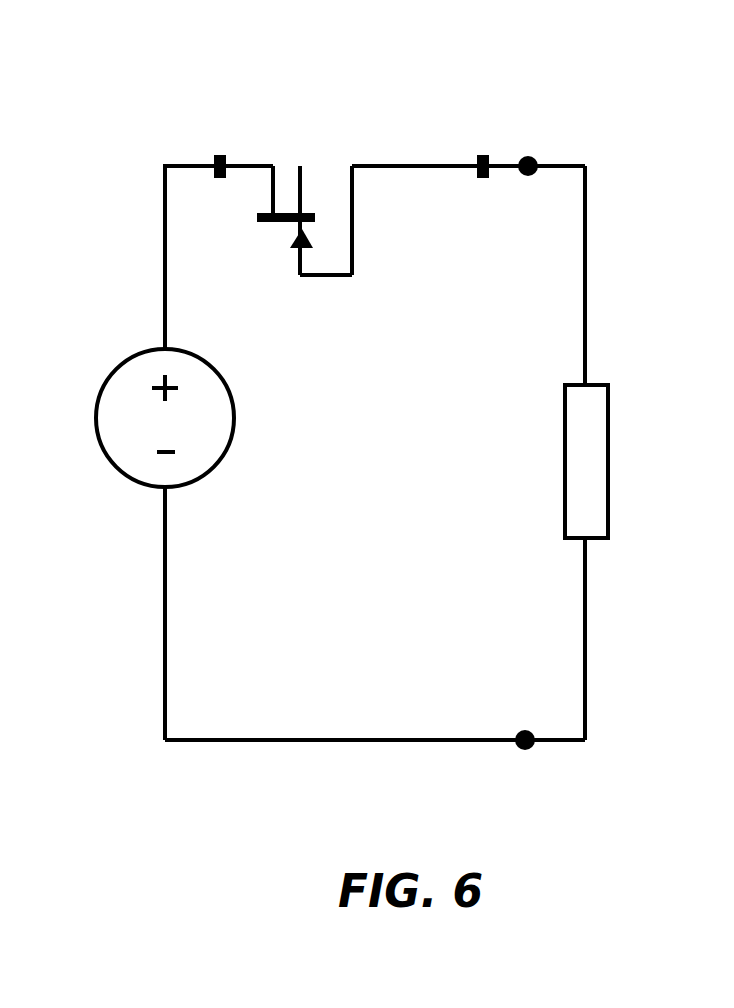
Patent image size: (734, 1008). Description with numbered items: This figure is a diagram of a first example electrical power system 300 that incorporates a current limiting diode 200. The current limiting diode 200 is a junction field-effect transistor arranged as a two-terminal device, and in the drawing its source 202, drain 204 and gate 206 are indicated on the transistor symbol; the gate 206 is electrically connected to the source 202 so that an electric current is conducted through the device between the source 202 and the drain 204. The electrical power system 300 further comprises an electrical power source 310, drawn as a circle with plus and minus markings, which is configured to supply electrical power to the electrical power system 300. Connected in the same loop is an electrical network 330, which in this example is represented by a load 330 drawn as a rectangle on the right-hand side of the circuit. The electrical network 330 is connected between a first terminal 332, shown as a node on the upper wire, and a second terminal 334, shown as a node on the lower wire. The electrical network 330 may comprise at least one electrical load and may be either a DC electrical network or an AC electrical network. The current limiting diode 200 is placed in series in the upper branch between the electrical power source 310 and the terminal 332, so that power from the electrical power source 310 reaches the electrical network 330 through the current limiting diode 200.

The current limiting diode 200 is at (288, 142).
The source 202 is at (407, 166).
The drain 204 is at (235, 165).
The gate 206 is at (295, 245).
The electrical power system 300 is at (173, 820).
The electrical power source 310 is at (208, 473).
The electrical network 330 is at (608, 495).
The terminal 332 is at (533, 160).
The terminal 334 is at (520, 750).